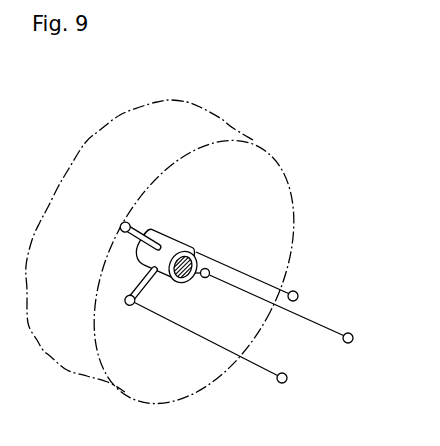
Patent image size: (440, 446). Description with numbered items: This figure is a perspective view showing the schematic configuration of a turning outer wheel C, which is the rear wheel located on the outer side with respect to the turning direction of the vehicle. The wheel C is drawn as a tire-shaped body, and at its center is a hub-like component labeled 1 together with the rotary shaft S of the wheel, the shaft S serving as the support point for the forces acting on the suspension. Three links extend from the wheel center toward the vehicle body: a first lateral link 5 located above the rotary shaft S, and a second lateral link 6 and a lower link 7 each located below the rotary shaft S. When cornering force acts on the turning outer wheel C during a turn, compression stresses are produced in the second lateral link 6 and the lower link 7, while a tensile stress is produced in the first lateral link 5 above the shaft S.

The detection device 1 is at (170, 234).
The rotary shaft S is at (186, 286).
The first lateral link 5 is at (240, 271).
The second lateral link 6 is at (256, 364).
The lower link 7 is at (313, 321).
The turning outer wheel C is at (227, 115).